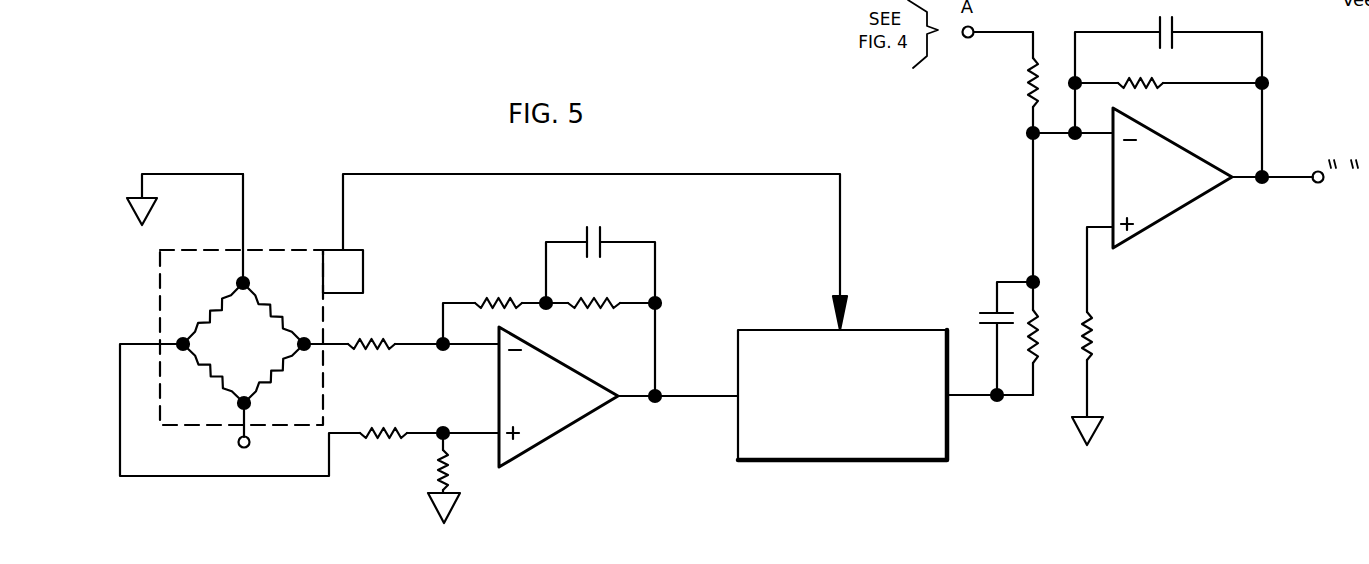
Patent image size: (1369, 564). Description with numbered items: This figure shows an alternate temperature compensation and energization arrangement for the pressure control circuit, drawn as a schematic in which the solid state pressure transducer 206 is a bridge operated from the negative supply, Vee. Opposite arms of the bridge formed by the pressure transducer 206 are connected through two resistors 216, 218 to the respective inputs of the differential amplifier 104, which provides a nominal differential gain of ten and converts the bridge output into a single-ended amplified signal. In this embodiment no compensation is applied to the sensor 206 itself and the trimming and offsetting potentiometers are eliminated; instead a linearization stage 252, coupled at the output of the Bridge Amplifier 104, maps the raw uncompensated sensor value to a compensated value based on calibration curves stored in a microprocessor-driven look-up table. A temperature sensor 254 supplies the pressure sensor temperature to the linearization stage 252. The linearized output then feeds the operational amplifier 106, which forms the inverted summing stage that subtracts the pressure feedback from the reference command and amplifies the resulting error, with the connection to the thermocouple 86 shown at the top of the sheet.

The thermocouple 86 is at (241, 0).
The pressure transducer 206 is at (141, 325).
The temperature sensor 254 is at (364, 250).
The resistor 216 is at (385, 338).
The resistor 218 is at (382, 441).
The differential amplifier 104 is at (587, 347).
The linearization stage 252 is at (940, 452).
The operational amplifier 106 is at (1195, 231).